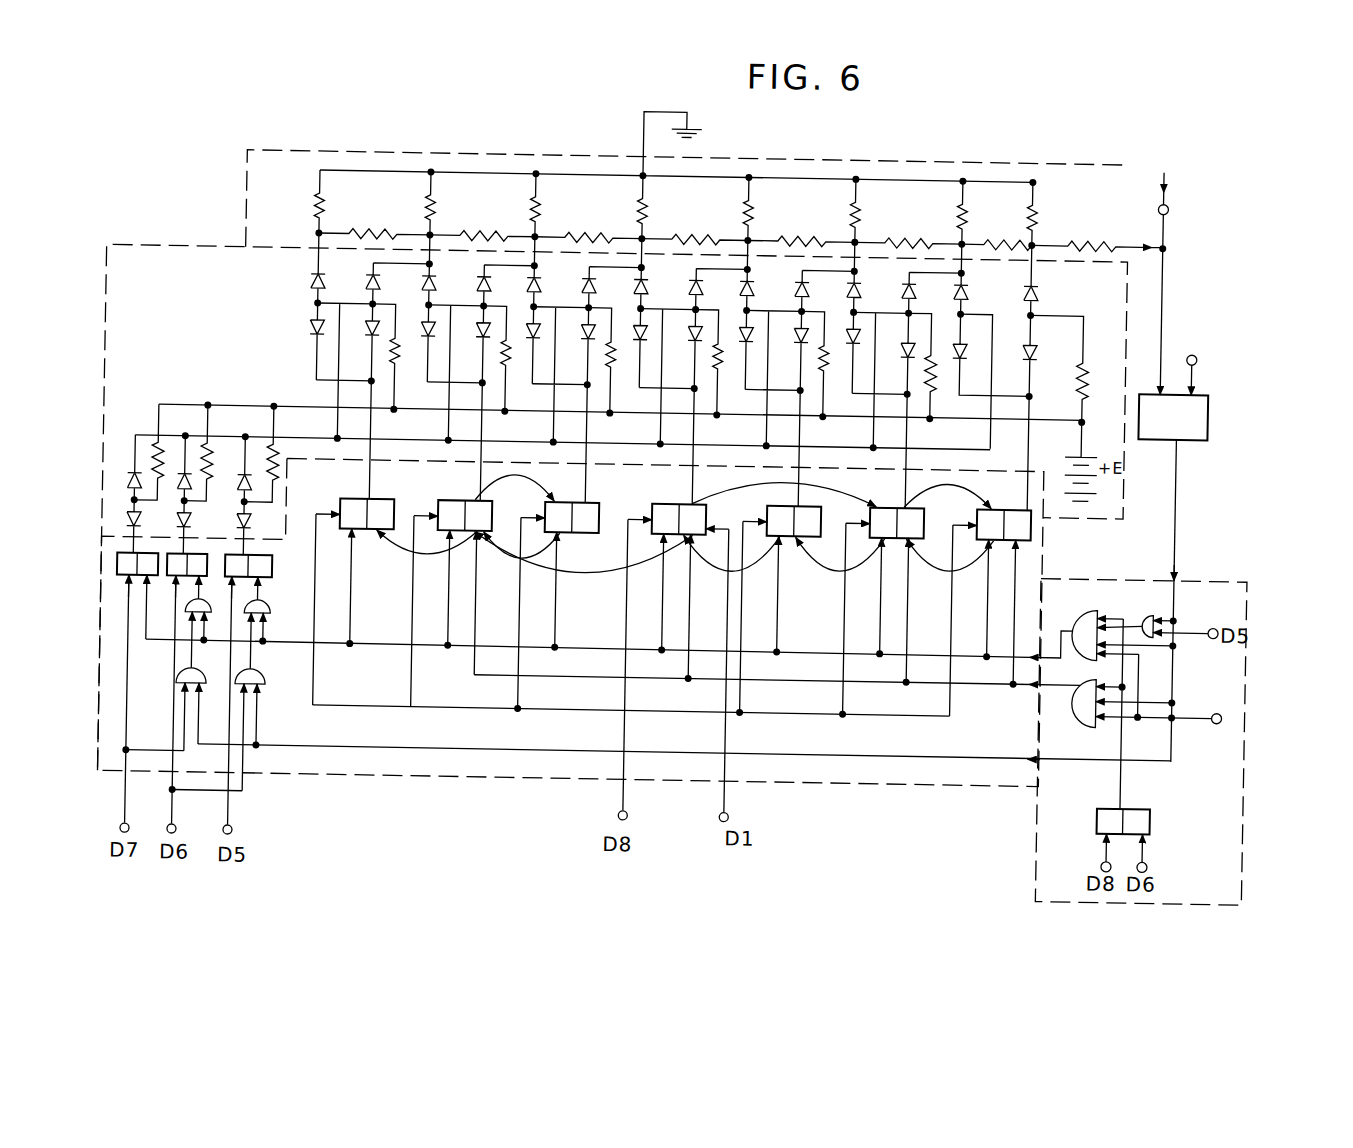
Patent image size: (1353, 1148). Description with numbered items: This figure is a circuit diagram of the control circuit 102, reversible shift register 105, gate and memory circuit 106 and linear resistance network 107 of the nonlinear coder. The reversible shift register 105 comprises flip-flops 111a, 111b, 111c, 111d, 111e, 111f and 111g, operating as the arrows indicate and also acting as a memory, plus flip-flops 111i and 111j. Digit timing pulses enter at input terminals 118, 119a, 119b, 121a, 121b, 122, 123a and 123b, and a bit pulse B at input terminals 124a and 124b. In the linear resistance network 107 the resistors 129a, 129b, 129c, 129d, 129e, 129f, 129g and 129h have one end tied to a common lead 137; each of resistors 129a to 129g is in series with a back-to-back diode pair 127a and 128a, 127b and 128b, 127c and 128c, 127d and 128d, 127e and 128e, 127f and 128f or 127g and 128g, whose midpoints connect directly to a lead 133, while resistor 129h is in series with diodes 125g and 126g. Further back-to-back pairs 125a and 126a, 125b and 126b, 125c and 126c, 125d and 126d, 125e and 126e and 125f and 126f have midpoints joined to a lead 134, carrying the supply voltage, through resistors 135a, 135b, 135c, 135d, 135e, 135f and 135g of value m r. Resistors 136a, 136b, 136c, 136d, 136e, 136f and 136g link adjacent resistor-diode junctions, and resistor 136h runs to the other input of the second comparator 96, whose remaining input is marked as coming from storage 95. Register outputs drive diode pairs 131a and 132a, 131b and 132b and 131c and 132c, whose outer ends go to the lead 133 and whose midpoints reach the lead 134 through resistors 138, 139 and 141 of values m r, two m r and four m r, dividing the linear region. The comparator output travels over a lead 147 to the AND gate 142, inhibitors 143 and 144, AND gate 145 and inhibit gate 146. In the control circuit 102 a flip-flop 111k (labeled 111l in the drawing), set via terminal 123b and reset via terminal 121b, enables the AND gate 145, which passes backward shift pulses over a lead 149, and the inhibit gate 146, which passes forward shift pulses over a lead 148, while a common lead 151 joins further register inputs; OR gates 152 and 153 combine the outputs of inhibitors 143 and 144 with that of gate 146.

The from storage input 95 is at (1217, 285).
The second comparator 96 is at (1212, 400).
The control circuit 102 is at (1238, 778).
The reversible shift register 105 is at (372, 776).
The gate and memory circuit 106 is at (232, 258).
The linear resistance network 107 is at (262, 150).
The shift register stage 111a is at (1014, 498).
The shift register stage 111b is at (922, 510).
The shift register stage 111c is at (816, 508).
The shift register stage 111d is at (715, 506).
The shift register stage 111e is at (596, 504).
The shift register stage 111f is at (490, 506).
The shift register stage 111g is at (380, 504).
The flip-flop 111i is at (184, 556).
The flip-flop 111j is at (124, 566).
The flip-flop 111k is at (262, 566).
The flip-flop 111l is at (1156, 796).
The input terminal D1 118 is at (740, 810).
The input terminal D5 119a is at (244, 834).
The input terminal D5 119b is at (1219, 613).
The input terminal D6 121a is at (178, 833).
The input terminal D6 121b is at (1159, 851).
The input terminal D7 122 is at (131, 831).
The input terminal D8 123a is at (629, 810).
The input terminal D8 123b is at (1113, 852).
The input terminal B 124a is at (1201, 346).
The input terminal B 124b is at (1225, 698).
The diode 125a is at (401, 284).
The diode 125b is at (512, 286).
The diode 125c is at (616, 288).
The diode 125d is at (724, 289).
The diode 125e is at (830, 291).
The diode 125f is at (936, 293).
The diode 125g is at (1058, 280).
The diode 126a is at (354, 334).
The diode 126b is at (465, 336).
The diode 126c is at (570, 338).
The diode 126d is at (677, 342).
The diode 126e is at (783, 344).
The diode 126f is at (890, 347).
The diode 126g is at (1055, 356).
The diode 127a is at (345, 268).
The diode 127b is at (457, 270).
The diode 127c is at (561, 272).
The diode 127d is at (669, 274).
The diode 127e is at (774, 275).
The diode 127f is at (880, 277).
The diode 127g is at (991, 279).
The diode 128a is at (312, 333).
The diode 128b is at (426, 340).
The diode 128c is at (516, 337).
The diode 128d is at (622, 340).
The diode 128e is at (729, 342).
The diode 128f is at (835, 346).
The diode 128g is at (991, 355).
The resistor 2r 129a is at (305, 201).
The resistor 2r 129b is at (414, 203).
The resistor 2r 129c is at (522, 205).
The resistor 2r 129d is at (633, 207).
The resistor 2r 129e is at (738, 209).
The resistor 2r 129f is at (833, 210).
The resistor 2r 129g is at (951, 212).
The resistor 2r 129h is at (1019, 214).
The diode 131a is at (256, 470).
The diode 131b is at (188, 472).
The diode 131c is at (133, 485).
The diode 132a is at (257, 522).
The diode 132b is at (197, 522).
The diode 132c is at (133, 522).
The bus line 133 is at (426, 441).
The bus line 134 is at (620, 399).
The resistor mr 135a is at (413, 357).
The resistor mr 135b is at (522, 359).
The resistor mr 135c is at (627, 361).
The resistor mr 135d is at (736, 363).
The resistor mr 135e is at (841, 364).
The resistor mr 135f is at (948, 366).
The resistor mr 135g is at (1059, 368).
The resistor r 136a is at (374, 230).
The resistor r 136b is at (483, 227).
The resistor r 136c is at (588, 231).
The resistor r 136d is at (694, 236).
The resistor r 136e is at (801, 237).
The resistor r 136f is at (908, 243).
The resistor r 136g is at (996, 246).
The resistor r 136h is at (1098, 224).
The grounded bus line 137 is at (688, 178).
The resistor 138 is at (283, 486).
The resistor 139 is at (214, 452).
The resistor 141 is at (160, 456).
The AND gate 142 is at (1156, 605).
The AND gate 143 is at (268, 680).
The AND gate 144 is at (212, 680).
The AND gate 145 is at (1091, 718).
The AND gate 146 is at (1092, 609).
The comparator output line 147 is at (1197, 601).
The control line 148 is at (600, 652).
The control line 149 is at (802, 676).
The control line 151 is at (897, 714).
The AND gate 152 is at (270, 608).
The AND gate 153 is at (216, 610).